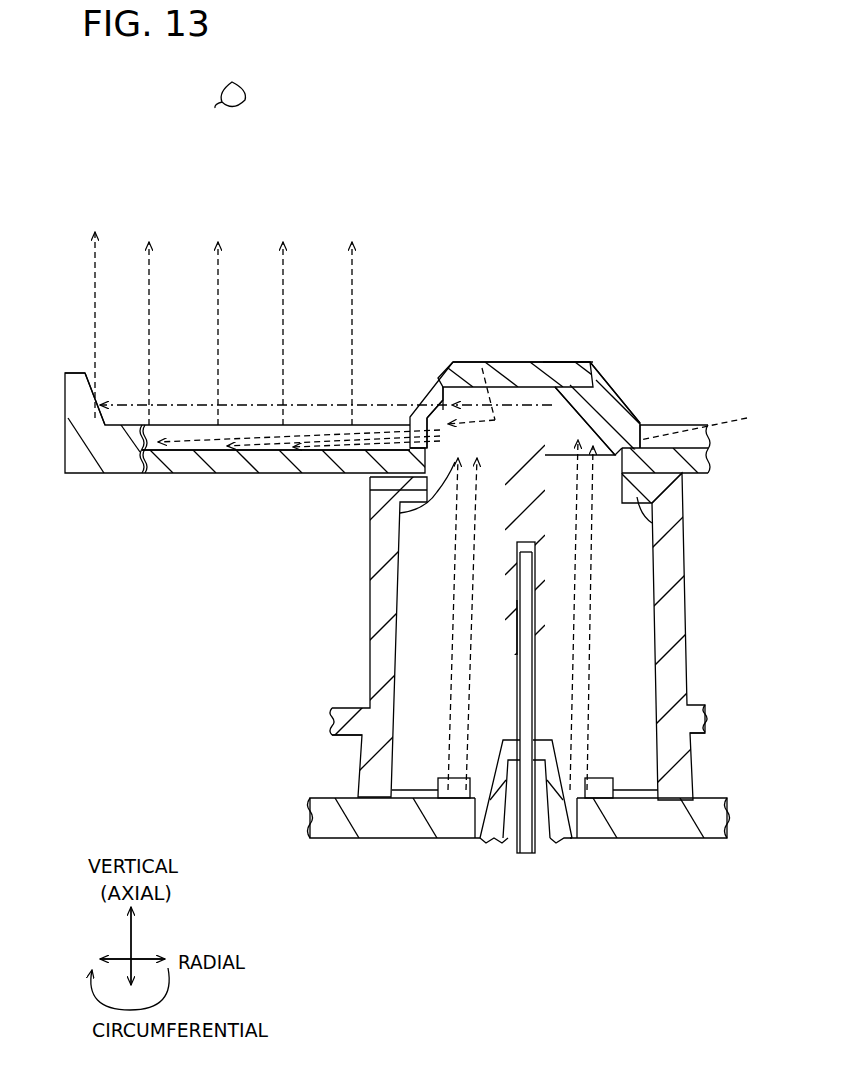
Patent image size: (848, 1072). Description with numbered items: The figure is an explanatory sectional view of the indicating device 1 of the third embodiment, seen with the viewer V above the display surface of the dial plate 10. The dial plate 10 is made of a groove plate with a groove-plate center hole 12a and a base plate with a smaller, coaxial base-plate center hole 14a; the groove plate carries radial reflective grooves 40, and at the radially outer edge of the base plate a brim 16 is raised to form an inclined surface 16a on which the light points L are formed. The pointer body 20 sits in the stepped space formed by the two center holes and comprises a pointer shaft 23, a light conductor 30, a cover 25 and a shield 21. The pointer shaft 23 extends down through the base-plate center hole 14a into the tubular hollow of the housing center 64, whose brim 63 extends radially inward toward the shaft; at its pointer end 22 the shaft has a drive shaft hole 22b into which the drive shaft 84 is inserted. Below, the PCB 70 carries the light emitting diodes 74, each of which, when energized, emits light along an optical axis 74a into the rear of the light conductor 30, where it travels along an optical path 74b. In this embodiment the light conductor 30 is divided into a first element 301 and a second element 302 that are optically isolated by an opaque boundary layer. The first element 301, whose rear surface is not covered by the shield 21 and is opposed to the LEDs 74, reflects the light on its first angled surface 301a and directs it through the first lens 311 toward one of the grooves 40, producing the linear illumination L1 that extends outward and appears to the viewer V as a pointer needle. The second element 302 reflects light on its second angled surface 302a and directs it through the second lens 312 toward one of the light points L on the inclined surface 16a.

The indicating device 1 is at (779, 376).
The dial plate 10 is at (722, 449).
The groove-plate center hole 12a is at (668, 426).
The base-plate center hole 14a is at (653, 500).
The brim 16 is at (83, 404).
The inclined surface 16a is at (57, 370).
The pointer body 20 is at (535, 352).
The shield 21 is at (372, 491).
The pointer end 22 is at (517, 690).
The drive shaft hole 22b is at (535, 626).
The pointer shaft 23 is at (547, 529).
The cover 25 is at (495, 362).
The light conductor 30 is at (607, 380).
The groove 40 is at (190, 450).
The brim 63 is at (653, 523).
The housing center 64 is at (684, 550).
The PCB 70 is at (708, 805).
The light emitting diode 74 is at (392, 790).
The optical axis 74a is at (443, 758).
The optical path 74b is at (482, 378).
The drive shaft 84 is at (535, 852).
The first element 301 is at (400, 514).
The first angled surface 301a is at (591, 352).
The second element 302 is at (600, 370).
The second angled surface 302a is at (642, 419).
The first lens 311 is at (431, 402).
The second lens 312 is at (432, 386).
The light point L is at (93, 365).
The linear illumination L1 is at (160, 230).
The viewer V is at (243, 88).